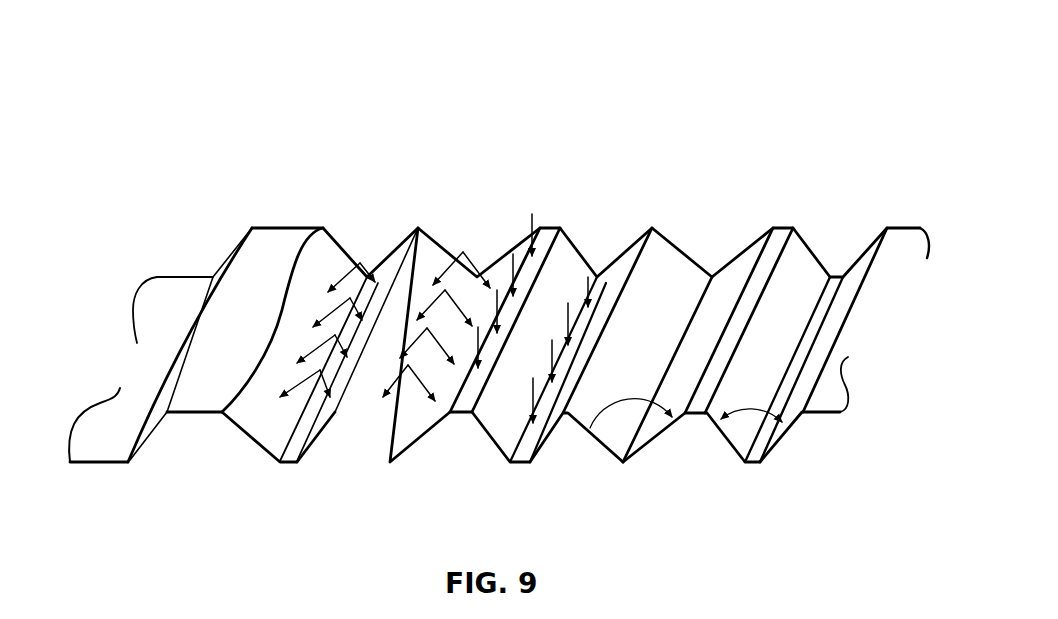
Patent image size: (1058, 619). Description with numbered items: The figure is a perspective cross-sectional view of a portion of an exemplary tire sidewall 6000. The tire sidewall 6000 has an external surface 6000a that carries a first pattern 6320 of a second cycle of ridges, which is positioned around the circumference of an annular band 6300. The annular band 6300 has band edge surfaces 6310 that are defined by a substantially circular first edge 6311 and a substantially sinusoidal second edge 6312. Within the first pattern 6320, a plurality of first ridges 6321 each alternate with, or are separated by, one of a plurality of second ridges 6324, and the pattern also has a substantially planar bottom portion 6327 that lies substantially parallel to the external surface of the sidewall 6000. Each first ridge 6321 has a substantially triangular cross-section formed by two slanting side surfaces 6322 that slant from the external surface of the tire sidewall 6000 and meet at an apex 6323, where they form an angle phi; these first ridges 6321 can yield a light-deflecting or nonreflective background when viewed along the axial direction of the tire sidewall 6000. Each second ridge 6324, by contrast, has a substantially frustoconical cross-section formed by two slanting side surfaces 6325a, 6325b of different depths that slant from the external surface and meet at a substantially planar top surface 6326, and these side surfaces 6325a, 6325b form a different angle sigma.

The tire sidewall 6000 is at (499, 294).
The external surface 6000a is at (157, 337).
The annular band 6300 is at (253, 308).
The band edge surfaces 6310 is at (253, 232).
The first edge 6311 is at (217, 276).
The second edge 6312 is at (299, 259).
The first pattern 6320 is at (648, 340).
The first ridges 6321 is at (573, 438).
The slanting side surfaces 6322 is at (607, 424).
The apex 6323 is at (640, 245).
The second ridges 6324 is at (691, 436).
The slanting side surface 6325a is at (803, 258).
The slanting side surface 6325b is at (727, 268).
The top surface 6326 is at (778, 231).
The bottom portion 6327 is at (807, 348).